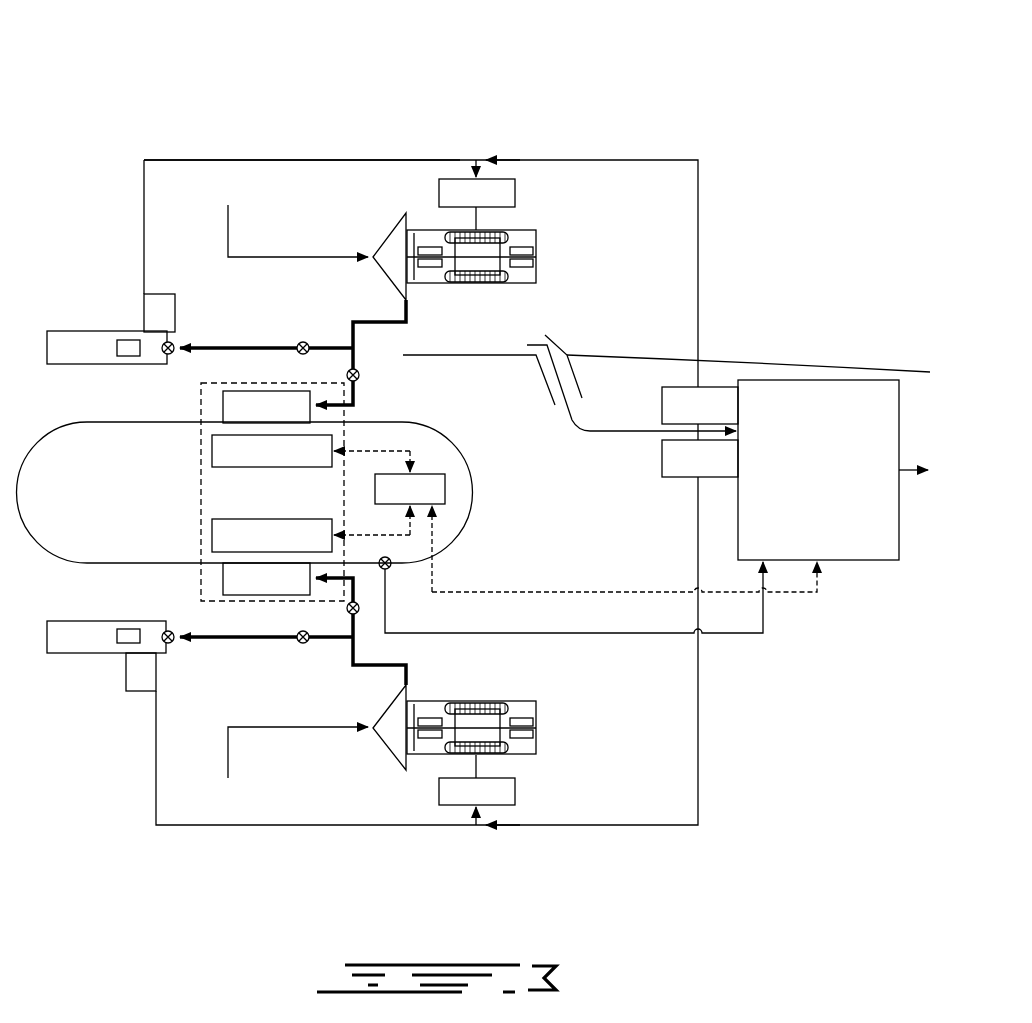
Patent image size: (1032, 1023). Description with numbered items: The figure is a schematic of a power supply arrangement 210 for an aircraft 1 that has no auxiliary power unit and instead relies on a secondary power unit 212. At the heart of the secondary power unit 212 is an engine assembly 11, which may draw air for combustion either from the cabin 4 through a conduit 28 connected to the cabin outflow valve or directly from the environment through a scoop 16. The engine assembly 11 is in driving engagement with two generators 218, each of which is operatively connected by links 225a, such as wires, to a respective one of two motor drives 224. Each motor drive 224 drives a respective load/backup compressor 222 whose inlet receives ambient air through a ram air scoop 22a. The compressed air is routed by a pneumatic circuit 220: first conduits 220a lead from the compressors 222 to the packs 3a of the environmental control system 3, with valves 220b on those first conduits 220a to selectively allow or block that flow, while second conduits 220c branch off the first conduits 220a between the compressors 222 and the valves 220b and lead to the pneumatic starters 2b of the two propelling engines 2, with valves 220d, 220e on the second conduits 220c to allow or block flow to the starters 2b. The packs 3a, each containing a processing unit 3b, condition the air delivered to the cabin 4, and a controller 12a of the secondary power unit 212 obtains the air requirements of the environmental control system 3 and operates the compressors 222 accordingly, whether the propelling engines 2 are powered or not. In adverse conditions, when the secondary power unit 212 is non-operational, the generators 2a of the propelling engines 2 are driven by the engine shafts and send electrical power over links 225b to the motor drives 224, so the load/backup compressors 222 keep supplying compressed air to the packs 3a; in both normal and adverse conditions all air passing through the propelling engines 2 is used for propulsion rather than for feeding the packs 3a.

The aircraft 1 is at (98, 172).
The propelling engine 2 is at (78, 331).
The generator of the propelling engine 2a is at (175, 313).
The pneumatic starter 2b is at (128, 357).
The environmental control system 3 is at (201, 436).
The ECS pack 3a is at (266, 493).
The processing unit 3b is at (272, 493).
The cabin 4 is at (244, 492).
The engine assembly 11 is at (833, 470).
The controller of the SPU 12a is at (575, 521).
The scoop 16 is at (577, 322).
The ram air scoop 22a is at (229, 222).
The conduit 28 is at (765, 617).
The power supply arrangement 210 is at (596, 110).
The secondary power unit 212 is at (770, 212).
The generator 218 is at (717, 387).
The pneumatic circuit 220 is at (404, 622).
The first conduit 220a is at (406, 322).
The valve 220b is at (360, 378).
The second conduit 220c is at (267, 346).
The valve 220d is at (306, 343).
The valve 220e is at (169, 356).
The load/backup compressor 222 is at (383, 246).
The motor drive 224 is at (517, 194).
The link 225a is at (665, 160).
The link 225b is at (258, 160).